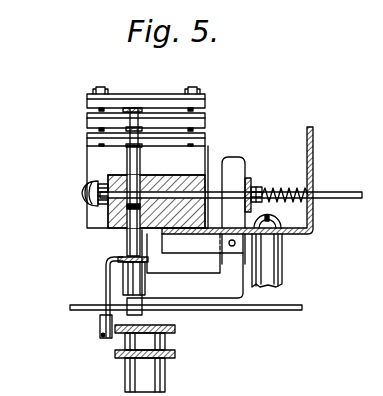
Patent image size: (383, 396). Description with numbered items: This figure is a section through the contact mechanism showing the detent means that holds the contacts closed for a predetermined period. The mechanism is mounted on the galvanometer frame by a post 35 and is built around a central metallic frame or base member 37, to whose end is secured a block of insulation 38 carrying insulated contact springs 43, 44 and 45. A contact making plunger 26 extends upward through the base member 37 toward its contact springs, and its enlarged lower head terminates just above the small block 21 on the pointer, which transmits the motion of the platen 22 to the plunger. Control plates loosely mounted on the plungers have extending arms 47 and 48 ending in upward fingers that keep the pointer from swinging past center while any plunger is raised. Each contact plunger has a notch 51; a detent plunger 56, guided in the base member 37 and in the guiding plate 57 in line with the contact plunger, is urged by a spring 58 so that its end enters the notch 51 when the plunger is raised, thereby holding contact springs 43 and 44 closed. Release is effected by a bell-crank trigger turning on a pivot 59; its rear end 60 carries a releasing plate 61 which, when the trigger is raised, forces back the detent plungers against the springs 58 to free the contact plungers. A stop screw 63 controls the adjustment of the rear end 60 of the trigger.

The block 21 is at (126, 310).
The platen 22 is at (175, 331).
The contact making plunger 26 is at (133, 238).
The post 35 is at (272, 283).
The central metallic frame or base member 37 is at (201, 173).
The block of insulation 38 is at (100, 163).
The contact spring 43 is at (135, 110).
The contact spring 44 is at (87, 121).
The contact spring 45 is at (87, 141).
The control plate arm 47 is at (106, 276).
The control plate arm 48 is at (101, 331).
The notch 51 is at (125, 206).
The detent plunger 56 is at (343, 187).
The guiding plate 57 is at (313, 171).
The spring 58 is at (283, 190).
The trigger pivot 59 is at (229, 246).
The rear end of trigger 60 is at (234, 164).
The releasing plate 61 is at (255, 186).
The stop screw 63 is at (82, 193).